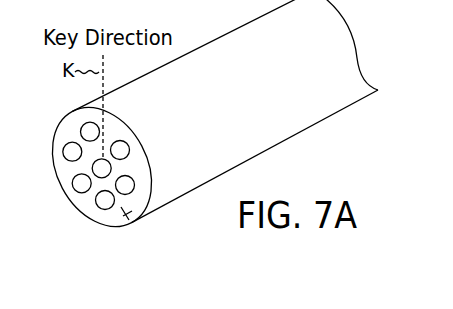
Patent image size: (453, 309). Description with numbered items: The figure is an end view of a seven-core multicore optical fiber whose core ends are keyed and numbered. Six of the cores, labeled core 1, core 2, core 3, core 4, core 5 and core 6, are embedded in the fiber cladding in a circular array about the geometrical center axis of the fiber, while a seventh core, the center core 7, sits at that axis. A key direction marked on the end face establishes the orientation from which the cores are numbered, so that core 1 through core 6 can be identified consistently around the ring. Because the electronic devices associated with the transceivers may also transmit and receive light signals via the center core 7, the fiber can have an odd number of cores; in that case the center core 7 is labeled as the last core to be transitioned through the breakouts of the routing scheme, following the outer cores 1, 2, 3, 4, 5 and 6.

The core 1 is at (90, 131).
The core 2 is at (120, 150).
The core 3 is at (72, 151).
The core 4 is at (125, 185).
The core 5 is at (81, 183).
The core 6 is at (105, 200).
The center core 7 is at (101, 168).